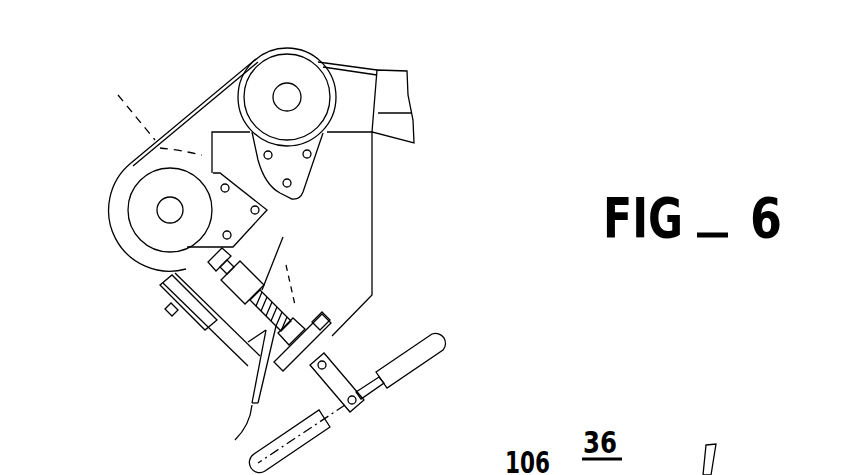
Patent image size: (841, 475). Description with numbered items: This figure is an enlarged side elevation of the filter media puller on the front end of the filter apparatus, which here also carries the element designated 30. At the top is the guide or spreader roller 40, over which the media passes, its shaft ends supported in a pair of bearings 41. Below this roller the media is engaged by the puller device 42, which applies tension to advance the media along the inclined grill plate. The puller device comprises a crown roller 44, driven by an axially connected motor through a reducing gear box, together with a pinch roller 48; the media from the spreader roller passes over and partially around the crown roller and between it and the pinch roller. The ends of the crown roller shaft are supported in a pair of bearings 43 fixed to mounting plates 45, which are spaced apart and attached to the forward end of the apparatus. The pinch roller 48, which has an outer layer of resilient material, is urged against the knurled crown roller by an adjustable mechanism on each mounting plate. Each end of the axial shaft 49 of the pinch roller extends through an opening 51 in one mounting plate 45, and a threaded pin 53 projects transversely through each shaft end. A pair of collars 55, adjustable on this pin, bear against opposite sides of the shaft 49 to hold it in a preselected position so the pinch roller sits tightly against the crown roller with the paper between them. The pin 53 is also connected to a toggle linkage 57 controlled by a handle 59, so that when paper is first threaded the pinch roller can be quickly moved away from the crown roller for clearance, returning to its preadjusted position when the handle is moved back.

The belt 30 is at (210, 95).
The spreader roller 40 is at (298, 46).
The bearings 41 is at (312, 82).
The puller device 42 is at (92, 212).
The bearings 43 is at (153, 230).
The crown roller 44 is at (143, 112).
The mounting plates 45 is at (362, 213).
The pinch roller 48 is at (215, 300).
The axial shaft 49 is at (240, 275).
The opening 51 is at (248, 342).
The threaded pin 53 is at (282, 332).
The collars 55 is at (278, 285).
The toggle linkage 57 is at (345, 377).
The handle 59 is at (400, 370).